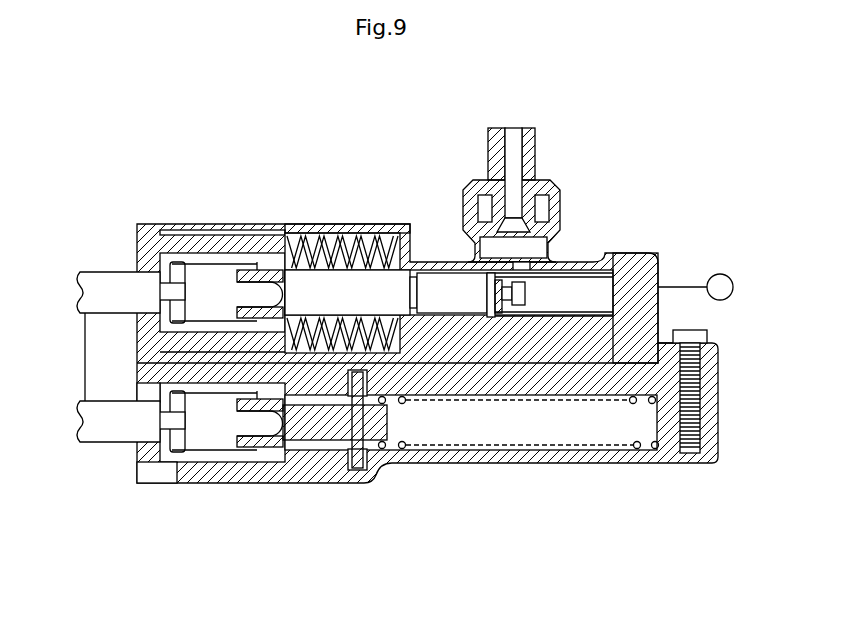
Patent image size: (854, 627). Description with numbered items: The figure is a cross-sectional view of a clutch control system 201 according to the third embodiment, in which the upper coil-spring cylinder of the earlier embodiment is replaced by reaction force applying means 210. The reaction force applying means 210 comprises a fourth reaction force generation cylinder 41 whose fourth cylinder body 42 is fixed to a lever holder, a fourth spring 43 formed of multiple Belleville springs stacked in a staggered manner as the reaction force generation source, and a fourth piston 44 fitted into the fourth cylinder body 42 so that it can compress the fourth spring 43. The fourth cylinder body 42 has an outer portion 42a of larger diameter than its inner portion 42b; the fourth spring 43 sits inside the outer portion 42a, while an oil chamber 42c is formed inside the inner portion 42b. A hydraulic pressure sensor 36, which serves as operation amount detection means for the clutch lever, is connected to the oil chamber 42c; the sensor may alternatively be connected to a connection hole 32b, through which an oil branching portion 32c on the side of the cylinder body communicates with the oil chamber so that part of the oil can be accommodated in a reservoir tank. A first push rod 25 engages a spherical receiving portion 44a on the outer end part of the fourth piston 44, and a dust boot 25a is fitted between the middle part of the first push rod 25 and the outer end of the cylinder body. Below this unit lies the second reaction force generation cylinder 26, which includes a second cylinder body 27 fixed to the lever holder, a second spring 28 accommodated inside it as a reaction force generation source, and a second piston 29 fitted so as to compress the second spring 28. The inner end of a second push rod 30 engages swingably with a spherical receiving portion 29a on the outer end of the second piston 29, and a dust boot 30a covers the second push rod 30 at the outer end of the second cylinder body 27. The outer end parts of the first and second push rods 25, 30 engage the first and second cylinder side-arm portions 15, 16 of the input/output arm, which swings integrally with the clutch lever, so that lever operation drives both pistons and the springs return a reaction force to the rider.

The first cylinder side-arm portion 15 is at (90, 270).
The second cylinder side-arm portion 16 is at (93, 443).
The first push rod 25 is at (123, 290).
The dust boot 25a is at (205, 262).
The second reaction force generation cylinder 26 is at (195, 487).
The second cylinder body 27 is at (302, 483).
The second spring 28 is at (493, 440).
The second piston 29 is at (333, 437).
The spherical receiving portion 29a is at (254, 425).
The second push rod 30 is at (123, 423).
The dust boot 30a is at (220, 456).
The connection hole 32b is at (522, 280).
The oil branching portion 32c is at (557, 192).
The hydraulic pressure sensor 36 is at (733, 287).
The fourth reaction force generation cylinder 41 is at (248, 222).
The fourth cylinder body 42 is at (449, 292).
The outer portion 42a is at (333, 232).
The inner portion 42b is at (613, 253).
The oil chamber 42c is at (567, 288).
The fourth spring 43 is at (368, 233).
The fourth piston 44 is at (378, 282).
The spherical receiving portion 44a is at (240, 292).
The clutch control system 201 is at (652, 122).
The reaction force applying means 210 is at (422, 346).